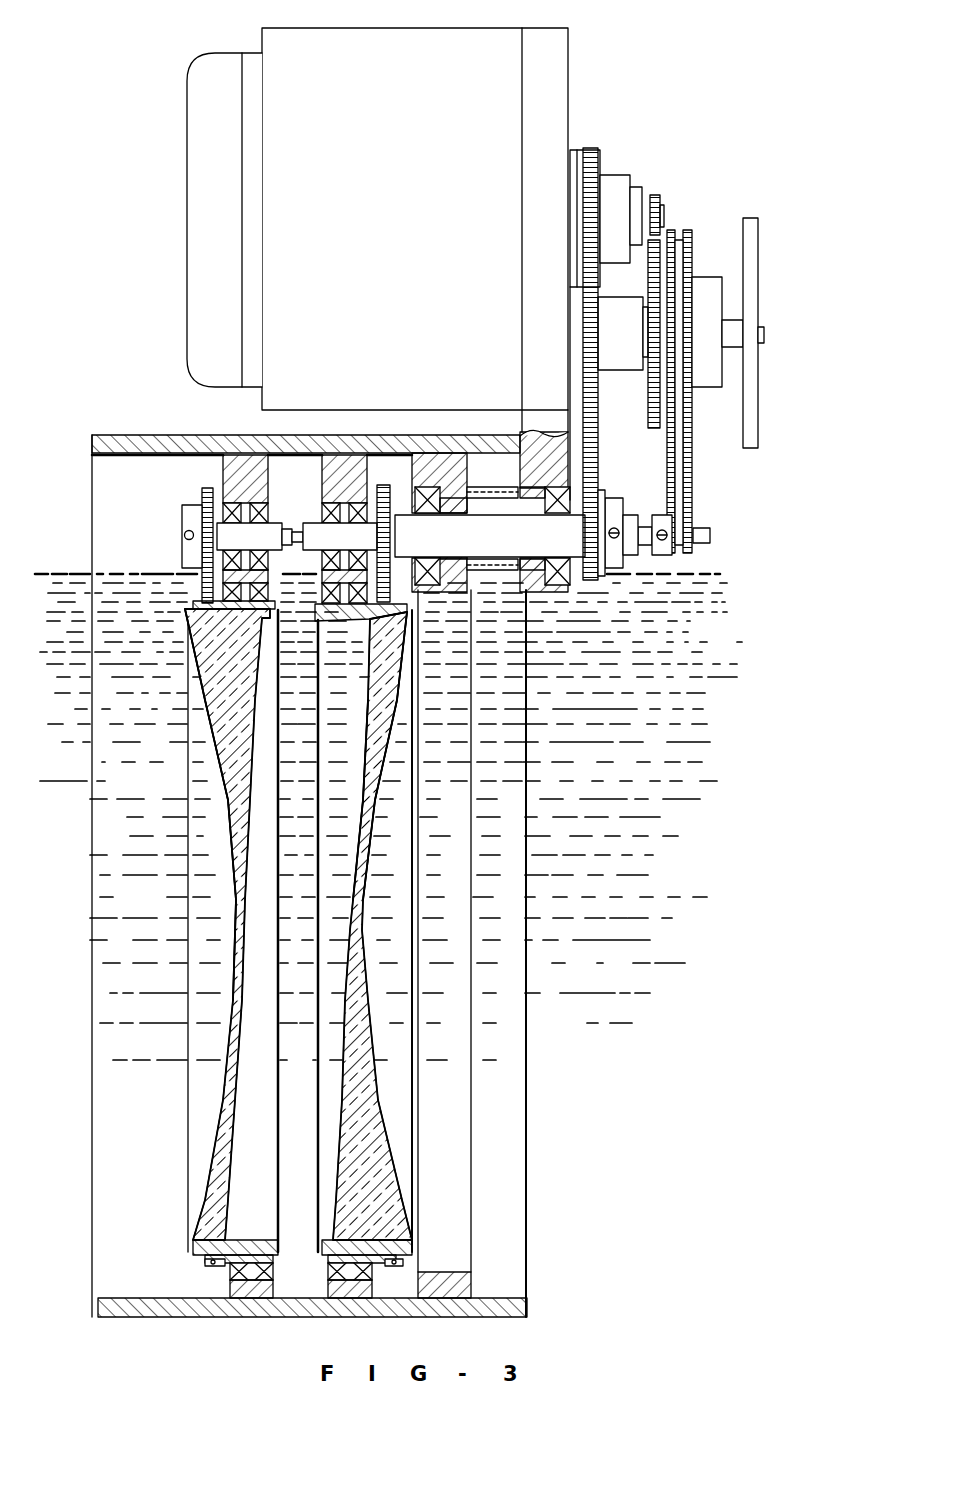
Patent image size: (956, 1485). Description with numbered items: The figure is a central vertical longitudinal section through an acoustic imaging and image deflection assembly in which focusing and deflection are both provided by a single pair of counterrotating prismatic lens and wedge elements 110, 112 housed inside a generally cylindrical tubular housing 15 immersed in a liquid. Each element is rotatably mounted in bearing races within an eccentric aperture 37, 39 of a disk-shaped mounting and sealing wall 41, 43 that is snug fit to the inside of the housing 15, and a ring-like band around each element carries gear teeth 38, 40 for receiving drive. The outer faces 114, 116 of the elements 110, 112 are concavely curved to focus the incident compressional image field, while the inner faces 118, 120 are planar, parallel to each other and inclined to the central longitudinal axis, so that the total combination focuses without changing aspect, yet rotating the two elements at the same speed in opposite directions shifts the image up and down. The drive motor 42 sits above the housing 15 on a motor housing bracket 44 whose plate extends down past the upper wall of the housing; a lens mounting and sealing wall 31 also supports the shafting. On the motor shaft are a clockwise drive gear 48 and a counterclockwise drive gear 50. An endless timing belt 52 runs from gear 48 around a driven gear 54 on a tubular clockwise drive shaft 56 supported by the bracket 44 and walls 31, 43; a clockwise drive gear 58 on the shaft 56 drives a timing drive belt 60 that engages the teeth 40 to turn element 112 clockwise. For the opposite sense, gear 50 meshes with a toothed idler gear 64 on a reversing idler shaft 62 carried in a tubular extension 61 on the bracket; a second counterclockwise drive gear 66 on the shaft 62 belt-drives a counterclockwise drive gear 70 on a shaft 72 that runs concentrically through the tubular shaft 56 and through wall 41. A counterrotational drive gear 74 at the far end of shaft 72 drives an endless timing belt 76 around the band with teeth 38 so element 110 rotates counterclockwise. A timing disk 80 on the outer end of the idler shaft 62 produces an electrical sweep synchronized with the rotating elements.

The tubular housing 15 is at (163, 440).
The lens mounting and sealing wall 31 is at (455, 520).
The wedge-holding aperture 37 is at (252, 1285).
The gear teeth 38 is at (212, 1268).
The wedge-holding aperture 39 is at (346, 1285).
The gear teeth 40 is at (395, 1268).
The wedge mounting and sealing wall 41 is at (242, 468).
The drive motor 42 is at (182, 166).
The wedge mounting and sealing wall 43 is at (345, 468).
The motor housing bracket 44 is at (560, 68).
The clockwise drive gear 48 is at (605, 185).
The counterclockwise drive gear 50 is at (660, 205).
The endless timing belt 52 is at (590, 160).
The driven gear 54 is at (606, 500).
The tubular clockwise drive shaft 56 is at (470, 515).
The clockwise drive gear 58 is at (422, 482).
The timing drive belt 60 is at (383, 494).
The tubular extension 61 is at (623, 360).
The reversing idler shaft 62 is at (766, 336).
The toothed idler gear 64 is at (652, 428).
The second counterclockwise drive gear 66 is at (688, 440).
The counterclockwise drive gear 70 is at (675, 526).
The counterclockwise drive shaft 72 is at (232, 540).
The counterrotational drive gear 74 is at (205, 512).
The endless timing belt 76 is at (205, 488).
The timing disk 80 is at (752, 270).
The counterrotating lens and wedge element 110 is at (245, 890).
The counterrotating lens and wedge element 112 is at (358, 890).
The outer face 114 is at (234, 830).
The outer face 116 is at (370, 830).
The inner face 118 is at (260, 782).
The inner face 120 is at (355, 782).